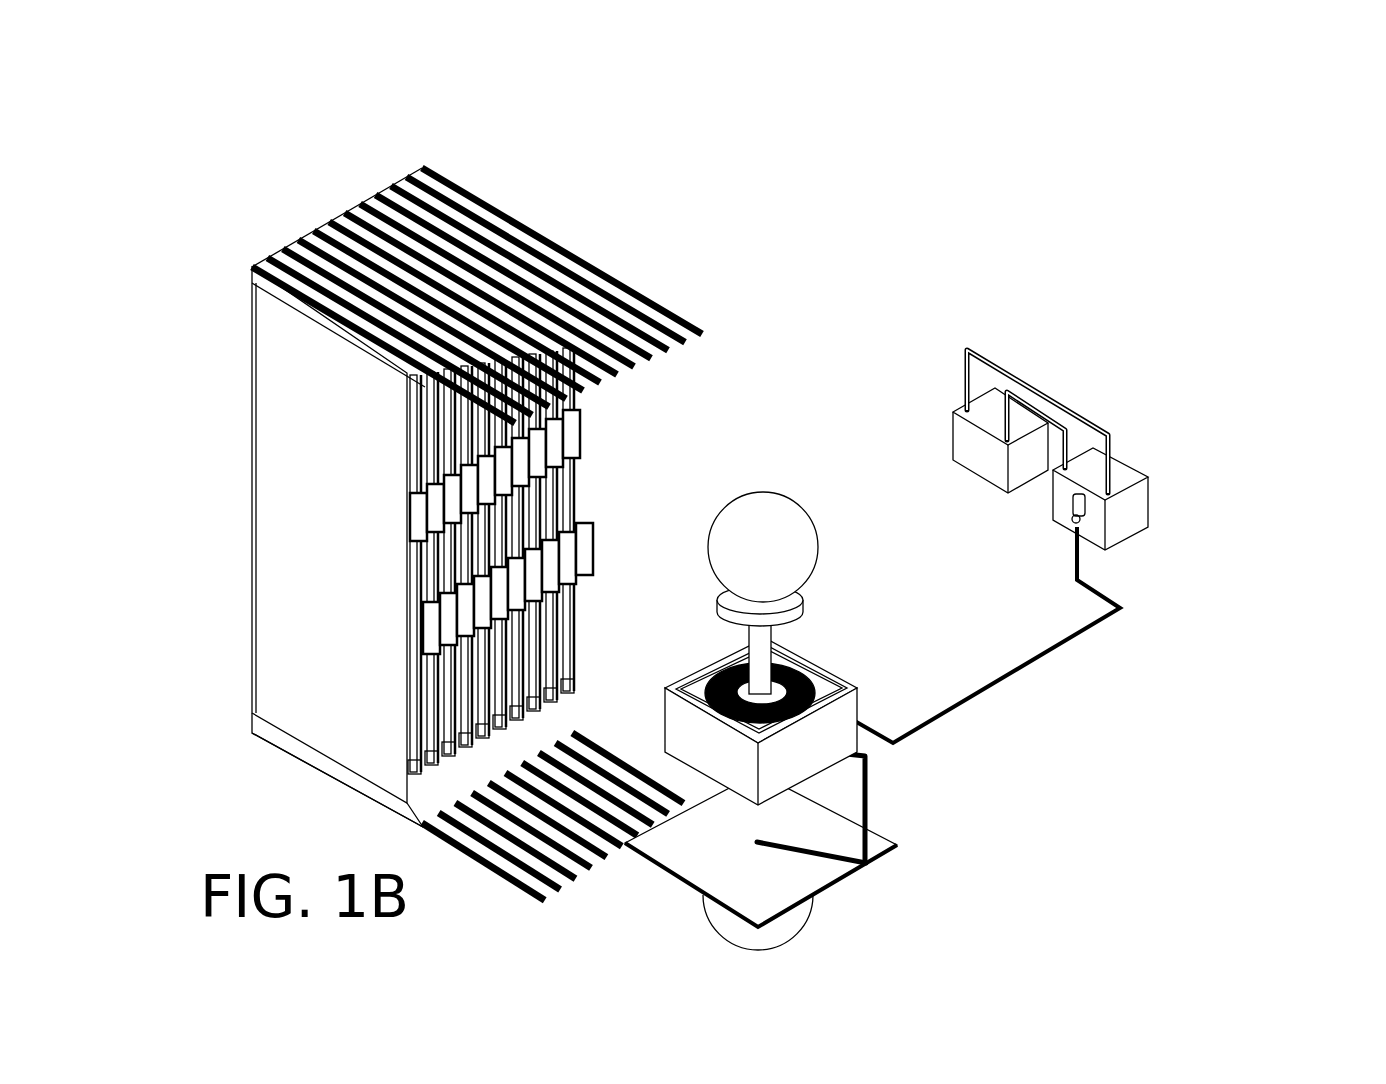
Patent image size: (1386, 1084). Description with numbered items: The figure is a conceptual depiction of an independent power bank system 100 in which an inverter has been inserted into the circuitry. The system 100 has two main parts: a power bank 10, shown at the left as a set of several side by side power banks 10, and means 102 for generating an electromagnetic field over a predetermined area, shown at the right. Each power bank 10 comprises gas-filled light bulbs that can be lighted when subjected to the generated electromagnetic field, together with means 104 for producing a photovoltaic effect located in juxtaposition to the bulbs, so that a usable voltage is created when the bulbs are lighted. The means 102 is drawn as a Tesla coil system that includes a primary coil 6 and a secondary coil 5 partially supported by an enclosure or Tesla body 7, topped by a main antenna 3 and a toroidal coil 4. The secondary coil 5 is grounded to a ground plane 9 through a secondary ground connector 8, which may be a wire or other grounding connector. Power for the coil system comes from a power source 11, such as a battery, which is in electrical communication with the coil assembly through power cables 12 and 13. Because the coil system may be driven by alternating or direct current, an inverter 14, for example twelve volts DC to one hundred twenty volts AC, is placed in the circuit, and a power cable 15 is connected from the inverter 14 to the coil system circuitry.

The independent power bank system 100 is at (1070, 489).
The means for generating an electromagnetic field 102 is at (936, 656).
The means for producing a photovoltaic effect 104 is at (421, 485).
The power bank 10 is at (330, 390).
The power source 11 is at (963, 447).
The power cable 12 is at (990, 357).
The power cable 13 is at (1115, 440).
The inverter 14 is at (1140, 497).
The power cable 15 is at (1000, 680).
The main antenna 3 is at (797, 543).
The toroidal coil 4 is at (797, 607).
The secondary coil 5 is at (763, 648).
The primary coil 6 is at (820, 705).
The Tesla body 7 is at (800, 763).
The secondary ground connector 8 is at (870, 777).
The ground plane 9 is at (820, 873).